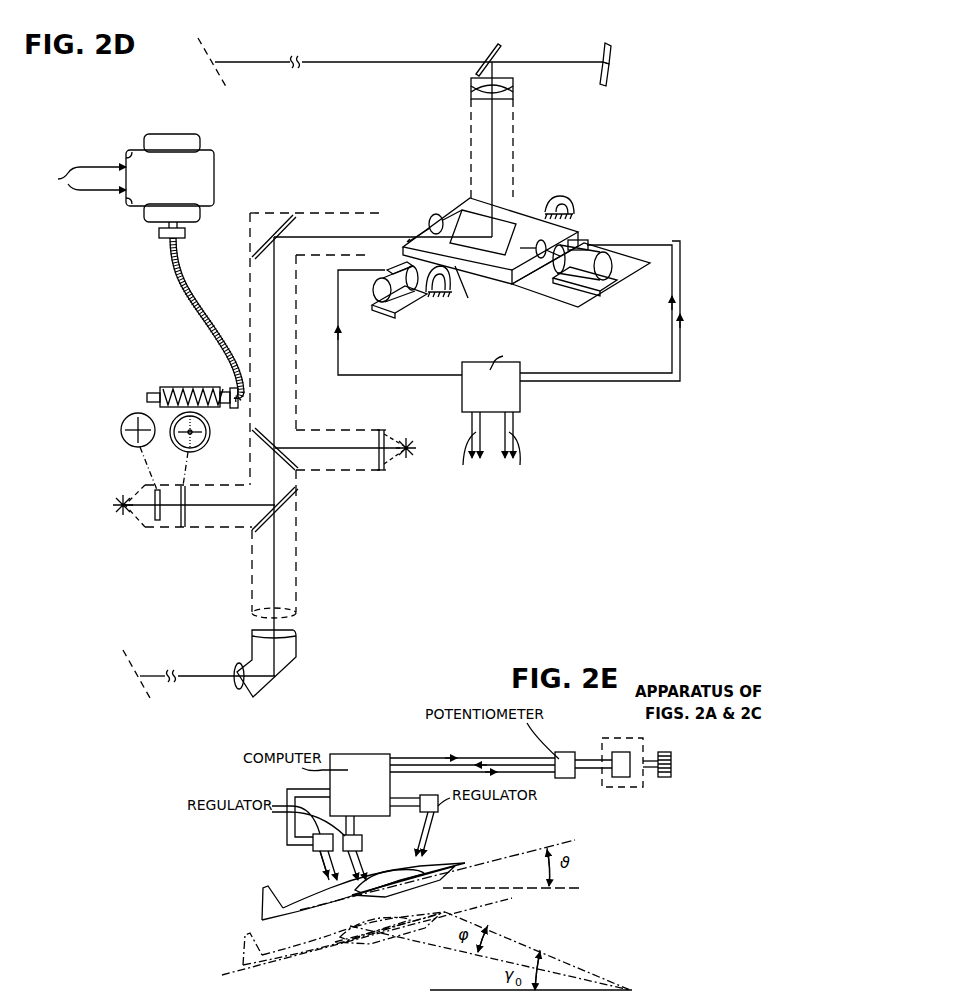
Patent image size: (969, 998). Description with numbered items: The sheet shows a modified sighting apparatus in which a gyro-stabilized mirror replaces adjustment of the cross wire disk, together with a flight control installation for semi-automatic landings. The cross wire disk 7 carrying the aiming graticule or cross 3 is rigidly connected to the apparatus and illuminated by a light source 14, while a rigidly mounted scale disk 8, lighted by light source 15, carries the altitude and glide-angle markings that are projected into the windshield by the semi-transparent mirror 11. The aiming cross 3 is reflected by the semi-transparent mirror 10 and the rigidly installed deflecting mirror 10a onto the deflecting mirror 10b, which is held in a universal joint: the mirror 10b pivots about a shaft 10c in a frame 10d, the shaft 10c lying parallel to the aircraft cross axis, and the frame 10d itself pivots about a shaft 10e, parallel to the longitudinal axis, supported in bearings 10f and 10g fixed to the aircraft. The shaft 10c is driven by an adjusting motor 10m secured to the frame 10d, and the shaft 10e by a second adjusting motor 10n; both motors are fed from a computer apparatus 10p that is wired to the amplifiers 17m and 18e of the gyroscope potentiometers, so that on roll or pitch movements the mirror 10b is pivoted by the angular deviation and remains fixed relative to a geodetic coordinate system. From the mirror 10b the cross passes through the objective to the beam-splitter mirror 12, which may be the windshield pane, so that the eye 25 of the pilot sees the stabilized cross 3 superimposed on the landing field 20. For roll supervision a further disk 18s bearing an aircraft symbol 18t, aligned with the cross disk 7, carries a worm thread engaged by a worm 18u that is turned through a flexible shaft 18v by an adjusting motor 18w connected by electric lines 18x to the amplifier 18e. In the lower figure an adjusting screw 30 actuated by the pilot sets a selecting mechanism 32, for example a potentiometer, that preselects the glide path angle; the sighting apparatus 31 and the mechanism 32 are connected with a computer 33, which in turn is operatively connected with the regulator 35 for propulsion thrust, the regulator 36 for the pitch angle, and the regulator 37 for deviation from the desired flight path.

In FIG. 2D, the landing field 20 is at (213, 60).
In FIG. 2D, the semi-transparent mirror 12 is at (481, 54).
In FIG. 2D, the eye of the pilot 25 is at (612, 60).
In FIG. 2D, the adjusting motor 18w is at (152, 164).
In FIG. 2D, the electric lines 18x is at (80, 167).
In FIG. 2D, the flexible shaft 18v is at (184, 298).
In FIG. 2D, the worm 18u is at (202, 386).
In FIG. 2D, the aiming graticule or cross wire 3 is at (122, 425).
In FIG. 2D, the cross wire disk 7 is at (136, 414).
In FIG. 2D, the aircraft symbol 18t is at (200, 440).
In FIG. 2D, the disk 18s is at (183, 522).
In FIG. 2D, the light source 14 is at (122, 500).
In FIG. 2D, the semi-transparent mirror 11 is at (260, 434).
In FIG. 2D, the semi-transparent mirror 10 is at (280, 505).
In FIG. 2D, the scale disk 8 is at (383, 432).
In FIG. 2D, the light source 15 is at (409, 442).
In FIG. 2D, the deflecting mirror 10a is at (268, 229).
In FIG. 2D, the deflecting mirror 10b is at (477, 222).
In FIG. 2D, the shaft 10c is at (430, 219).
In FIG. 2D, the frame 10d is at (407, 242).
In FIG. 2D, the shaft 10e is at (462, 286).
In FIG. 2D, the bearing 10f is at (440, 292).
In FIG. 2D, the bearing 10g is at (574, 204).
In FIG. 2D, the adjusting motor 10m is at (612, 262).
In FIG. 2D, the adjusting motor 10n is at (388, 292).
In FIG. 2D, the computer apparatus 10p is at (515, 397).
In FIG. 2D, the amplifier 17m is at (475, 452).
In FIG. 2D, the amplifier 18e is at (514, 452).
In FIG. 2E, the computer 33 is at (364, 754).
In FIG. 2E, the selecting mechanism 32 is at (568, 754).
In FIG. 2E, the sighting apparatus 31 is at (620, 738).
In FIG. 2E, the adjusting screw 30 is at (671, 762).
In FIG. 2E, the regulator 35 is at (312, 846).
In FIG. 2E, the regulator 36 is at (362, 842).
In FIG. 2E, the regulator 37 is at (436, 811).